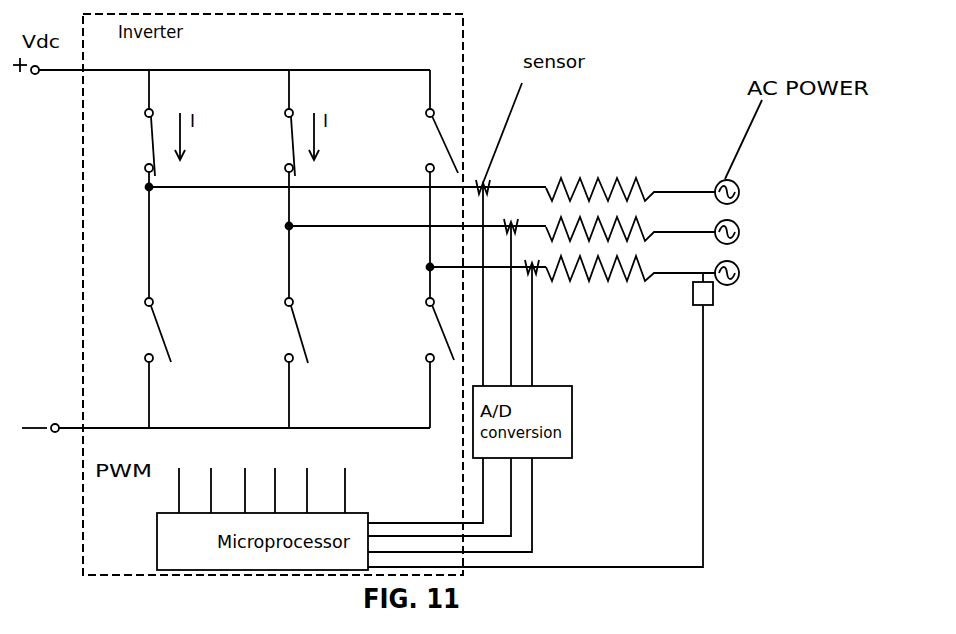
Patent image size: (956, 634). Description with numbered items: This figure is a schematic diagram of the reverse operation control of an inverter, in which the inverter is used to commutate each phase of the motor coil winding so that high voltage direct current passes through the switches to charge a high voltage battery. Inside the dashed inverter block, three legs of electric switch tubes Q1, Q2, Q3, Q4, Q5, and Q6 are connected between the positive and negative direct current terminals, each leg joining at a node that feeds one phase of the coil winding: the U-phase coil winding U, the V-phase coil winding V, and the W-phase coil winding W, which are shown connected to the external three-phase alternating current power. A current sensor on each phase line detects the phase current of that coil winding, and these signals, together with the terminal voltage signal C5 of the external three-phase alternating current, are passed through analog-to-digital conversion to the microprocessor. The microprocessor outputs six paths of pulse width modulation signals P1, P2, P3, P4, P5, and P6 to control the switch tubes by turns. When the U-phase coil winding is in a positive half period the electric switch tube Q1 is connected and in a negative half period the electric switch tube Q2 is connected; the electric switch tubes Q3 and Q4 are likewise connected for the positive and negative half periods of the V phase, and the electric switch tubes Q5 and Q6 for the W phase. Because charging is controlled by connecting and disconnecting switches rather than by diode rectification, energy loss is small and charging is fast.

The electric switch tube Q1 is at (131, 184).
The electric switch tube Q2 is at (136, 363).
The electric switch tube Q3 is at (269, 184).
The electric switch tube Q4 is at (277, 363).
The electric switch tube Q5 is at (422, 184).
The electric switch tube Q6 is at (422, 363).
The terminal voltage signal C5 is at (540, 420).
The U-phase coil winding U is at (642, 177).
The V-phase coil winding V is at (642, 218).
The W-phase coil winding W is at (642, 262).
The PWM signal P1 is at (182, 477).
The PWM signal P2 is at (214, 477).
The PWM signal P3 is at (244, 477).
The PWM signal P4 is at (277, 477).
The PWM signal P5 is at (308, 477).
The PWM signal P6 is at (344, 477).